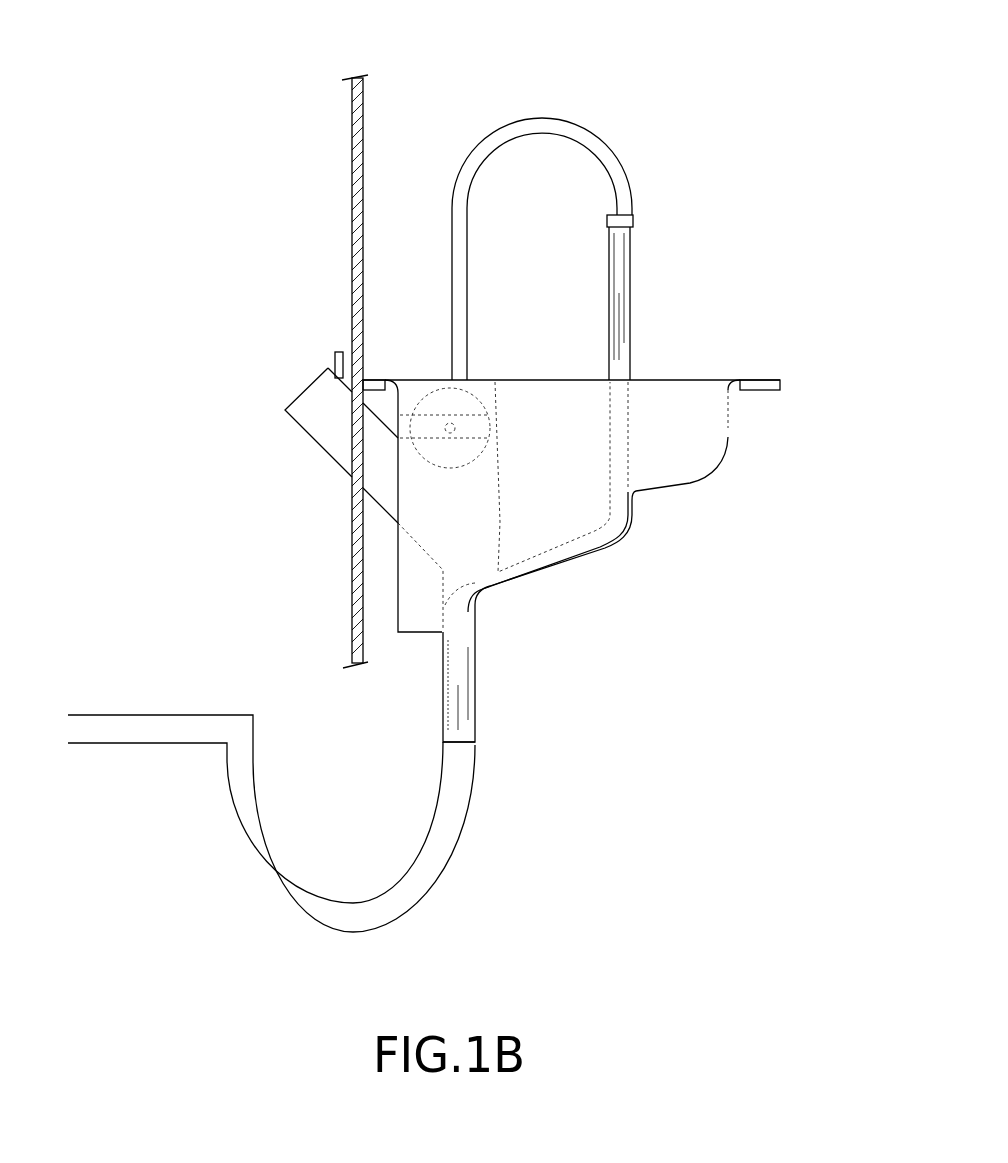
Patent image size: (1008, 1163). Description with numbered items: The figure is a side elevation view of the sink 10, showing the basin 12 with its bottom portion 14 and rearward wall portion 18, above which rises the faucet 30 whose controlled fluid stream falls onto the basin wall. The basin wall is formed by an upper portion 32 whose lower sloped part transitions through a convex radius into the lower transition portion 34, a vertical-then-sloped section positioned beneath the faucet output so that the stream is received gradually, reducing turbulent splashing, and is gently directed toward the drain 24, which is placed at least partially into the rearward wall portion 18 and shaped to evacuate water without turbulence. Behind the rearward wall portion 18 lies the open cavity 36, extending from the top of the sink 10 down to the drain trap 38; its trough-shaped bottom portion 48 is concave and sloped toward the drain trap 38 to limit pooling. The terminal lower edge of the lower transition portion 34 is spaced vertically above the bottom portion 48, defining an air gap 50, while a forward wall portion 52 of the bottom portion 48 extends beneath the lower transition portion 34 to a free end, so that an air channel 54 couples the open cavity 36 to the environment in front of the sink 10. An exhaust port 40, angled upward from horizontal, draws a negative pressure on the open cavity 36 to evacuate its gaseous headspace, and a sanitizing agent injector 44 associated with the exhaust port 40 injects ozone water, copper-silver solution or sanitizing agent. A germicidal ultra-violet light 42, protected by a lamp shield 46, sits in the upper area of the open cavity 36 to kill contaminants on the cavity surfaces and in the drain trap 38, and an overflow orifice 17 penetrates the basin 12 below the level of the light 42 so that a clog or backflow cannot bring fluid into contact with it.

The sink 10 is at (768, 131).
The basin 12 is at (668, 408).
The bottom portion 14 is at (549, 512).
The overflow orifice 17 is at (766, 429).
The rearward wall portion 18 is at (501, 467).
The drain 24 is at (505, 552).
The faucet 30 is at (607, 143).
The upper portion 32 is at (723, 467).
The lower transition portion 34 is at (628, 522).
The open cavity 36 is at (427, 543).
The drain trap 38 is at (478, 710).
The exhaust port 40 is at (318, 432).
The germicidal ultra-violet light 42 is at (452, 437).
The sanitizing agent injector 44 is at (340, 352).
The lamp shield 46 is at (450, 468).
The bottom portion of the open cavity 48 is at (432, 611).
The air gap 50 is at (456, 638).
The forward wall portion of the bottom portion 52 is at (574, 555).
The air channel 54 is at (633, 539).